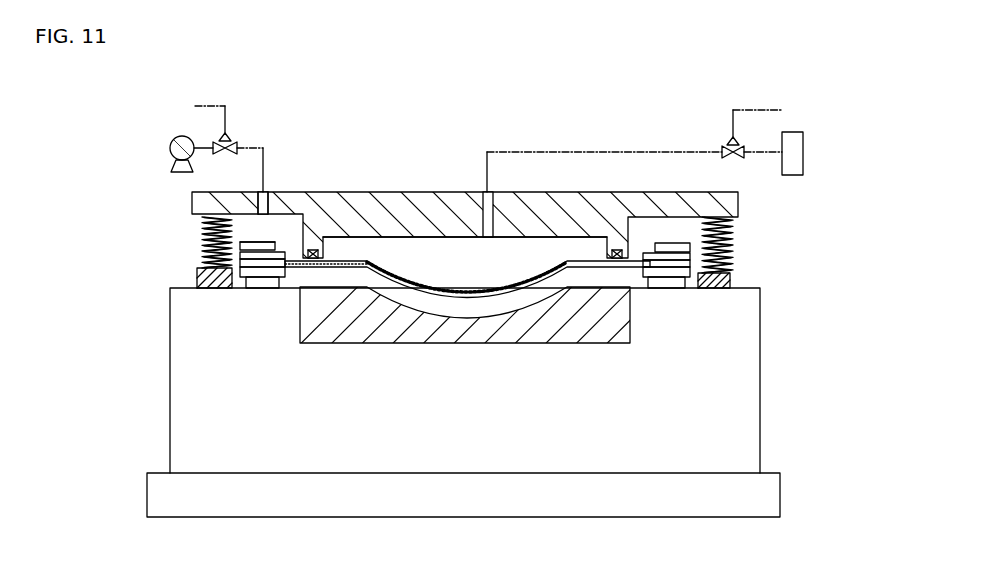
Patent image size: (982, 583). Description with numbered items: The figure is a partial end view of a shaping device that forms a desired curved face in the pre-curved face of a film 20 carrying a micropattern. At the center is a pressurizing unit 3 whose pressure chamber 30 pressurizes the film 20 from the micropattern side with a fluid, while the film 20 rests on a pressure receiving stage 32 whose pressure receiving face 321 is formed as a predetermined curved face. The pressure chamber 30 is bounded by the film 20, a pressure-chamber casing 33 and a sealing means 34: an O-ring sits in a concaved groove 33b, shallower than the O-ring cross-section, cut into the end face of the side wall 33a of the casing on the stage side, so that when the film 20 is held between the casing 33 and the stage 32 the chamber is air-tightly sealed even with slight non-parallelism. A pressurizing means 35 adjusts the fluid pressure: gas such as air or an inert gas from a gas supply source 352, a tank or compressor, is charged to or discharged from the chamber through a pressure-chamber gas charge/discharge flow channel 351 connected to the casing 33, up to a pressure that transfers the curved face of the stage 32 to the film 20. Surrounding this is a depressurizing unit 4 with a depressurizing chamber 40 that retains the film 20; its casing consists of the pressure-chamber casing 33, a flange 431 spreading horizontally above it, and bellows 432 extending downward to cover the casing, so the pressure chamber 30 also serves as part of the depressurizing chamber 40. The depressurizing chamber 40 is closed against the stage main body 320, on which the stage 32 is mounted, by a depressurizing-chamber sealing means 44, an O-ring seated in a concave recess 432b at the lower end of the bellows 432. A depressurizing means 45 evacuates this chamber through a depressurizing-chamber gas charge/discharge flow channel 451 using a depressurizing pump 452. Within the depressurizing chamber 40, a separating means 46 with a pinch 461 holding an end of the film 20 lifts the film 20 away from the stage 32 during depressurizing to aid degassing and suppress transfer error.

The pressurizing unit 3 is at (427, 180).
The pressure chamber 30 is at (447, 252).
The pressure-chamber casing 33 is at (462, 192).
The side wall 33a is at (287, 280).
The concaved groove 33b is at (312, 250).
The pressure receiving face 321 is at (402, 308).
The pressure receiving stage 32 is at (342, 340).
The stage main body 320 is at (592, 417).
The film 20 is at (467, 298).
The sealing means 34 is at (318, 280).
The depressurizing unit 4 is at (182, 227).
The depressurizing chamber 40 is at (287, 228).
The flange 431 is at (192, 197).
The bellows 432 is at (203, 248).
The concave recess 432b is at (205, 267).
The depressurizing-chamber sealing means 44 is at (215, 288).
The separating means 46 is at (692, 240).
The pinch 461 is at (683, 280).
The depressurizing means 45 is at (168, 118).
The depressurizing-chamber gas charge/discharge flow channel 451 is at (263, 147).
The depressurizing pump 452 is at (168, 143).
The pressurizing means 35 is at (640, 148).
The pressure-chamber gas charge/discharge flow channel 351 is at (567, 152).
The gas supply source 352 is at (806, 160).